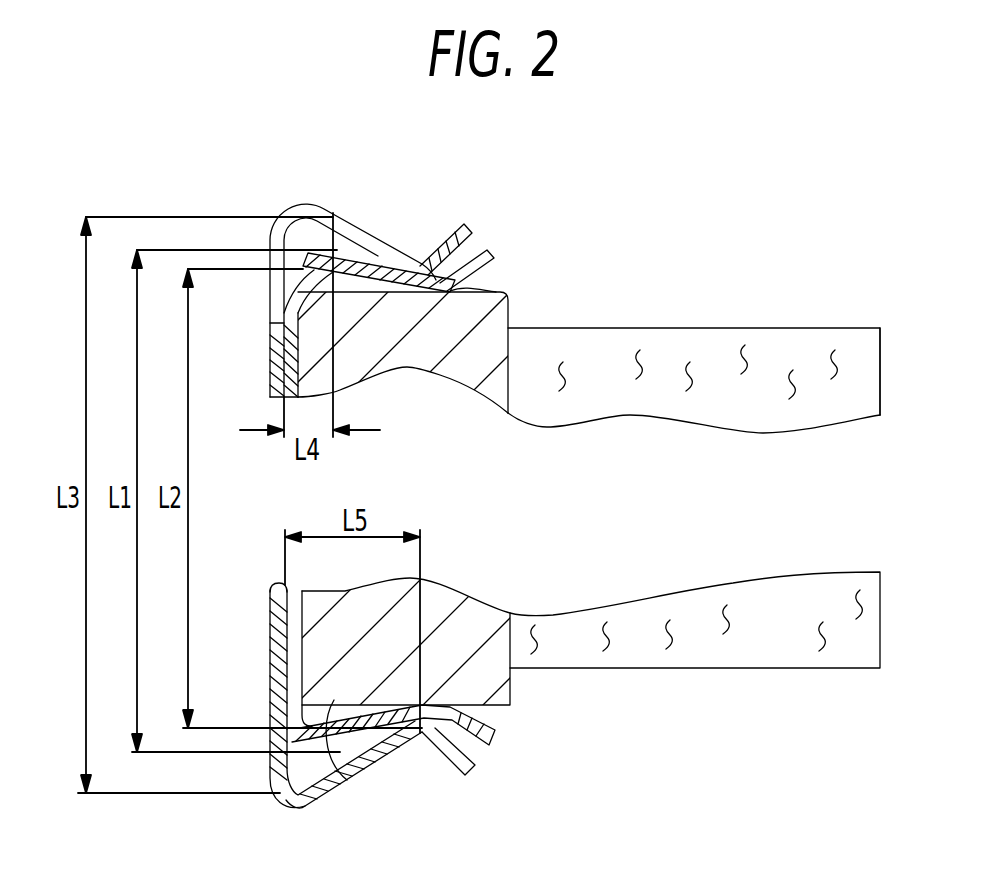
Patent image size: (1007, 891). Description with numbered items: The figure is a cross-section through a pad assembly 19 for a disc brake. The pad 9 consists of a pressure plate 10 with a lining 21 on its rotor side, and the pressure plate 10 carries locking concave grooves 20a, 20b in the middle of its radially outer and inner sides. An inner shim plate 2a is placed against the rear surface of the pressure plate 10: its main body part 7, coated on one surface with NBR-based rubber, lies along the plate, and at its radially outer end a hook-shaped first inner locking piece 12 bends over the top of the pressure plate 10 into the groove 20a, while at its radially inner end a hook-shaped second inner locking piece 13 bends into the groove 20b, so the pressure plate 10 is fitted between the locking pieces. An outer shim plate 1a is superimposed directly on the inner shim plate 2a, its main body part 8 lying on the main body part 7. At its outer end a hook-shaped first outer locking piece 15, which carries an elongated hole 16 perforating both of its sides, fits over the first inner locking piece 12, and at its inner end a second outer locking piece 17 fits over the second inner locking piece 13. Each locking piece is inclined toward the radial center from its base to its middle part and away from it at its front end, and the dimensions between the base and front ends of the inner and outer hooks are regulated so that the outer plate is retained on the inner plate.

The locking concave groove 20a is at (305, 270).
The inner shim plate 2a is at (333, 213).
The elongated hole 16 is at (380, 240).
The first outer locking piece 15 is at (467, 227).
The first inner locking piece 12 is at (493, 255).
The pressure plate 10 is at (490, 317).
The pad 9 is at (707, 360).
The lining 21 is at (813, 403).
The pad assembly 19 is at (883, 295).
The main body part of the inner shim plate 7 is at (288, 355).
The main body part of the outer shim plate 8 is at (273, 608).
The second inner locking piece 13 is at (487, 735).
The second outer locking piece 17 is at (470, 767).
The outer shim plate 1a is at (398, 772).
The locking concave groove 20b is at (347, 783).